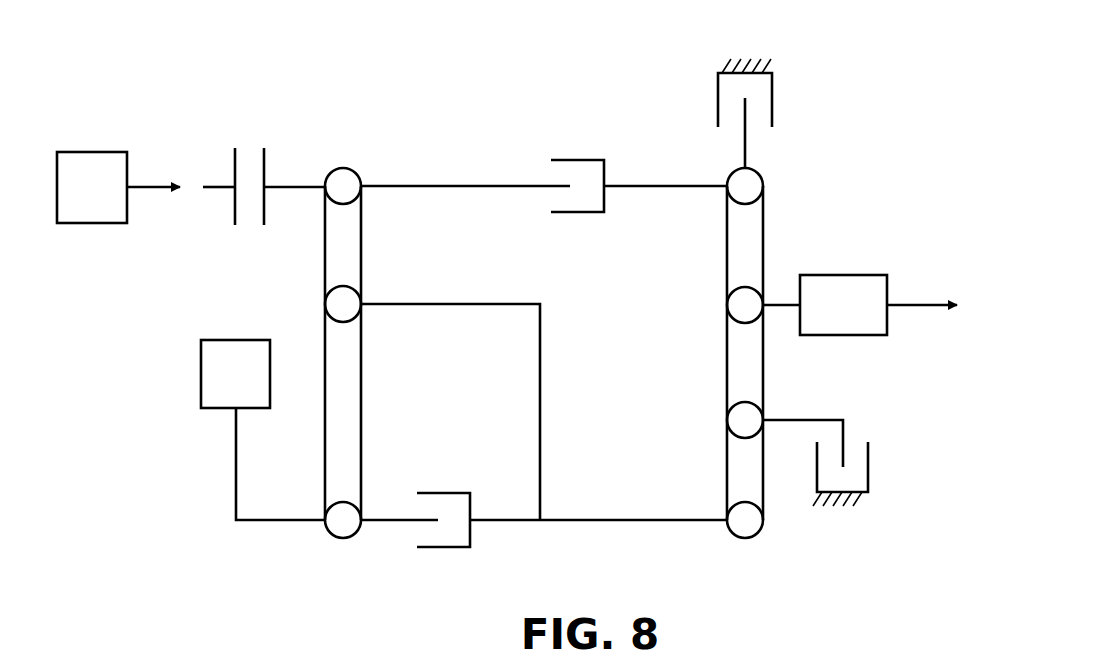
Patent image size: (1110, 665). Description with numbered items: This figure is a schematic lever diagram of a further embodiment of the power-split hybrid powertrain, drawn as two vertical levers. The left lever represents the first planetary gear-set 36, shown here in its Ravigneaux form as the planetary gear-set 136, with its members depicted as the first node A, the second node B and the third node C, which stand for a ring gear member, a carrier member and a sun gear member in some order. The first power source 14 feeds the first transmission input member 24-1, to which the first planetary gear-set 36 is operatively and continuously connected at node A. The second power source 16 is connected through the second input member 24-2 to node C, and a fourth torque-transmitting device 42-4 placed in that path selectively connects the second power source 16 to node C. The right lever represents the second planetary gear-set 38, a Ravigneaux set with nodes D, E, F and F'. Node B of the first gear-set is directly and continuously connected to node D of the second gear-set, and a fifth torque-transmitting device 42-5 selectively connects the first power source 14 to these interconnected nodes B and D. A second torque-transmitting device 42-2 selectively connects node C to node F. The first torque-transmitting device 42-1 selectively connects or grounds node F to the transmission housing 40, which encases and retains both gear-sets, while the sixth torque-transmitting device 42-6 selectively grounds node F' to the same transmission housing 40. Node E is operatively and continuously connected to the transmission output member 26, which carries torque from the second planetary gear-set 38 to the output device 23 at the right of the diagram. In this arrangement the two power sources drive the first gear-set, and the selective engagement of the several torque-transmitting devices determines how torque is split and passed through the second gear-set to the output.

The second power source 16 is at (101, 152).
The fourth torque-transmitting device 42-4 is at (266, 155).
The second input member 24-2 is at (314, 187).
The Ravigneaux first planetary gear-set 136 is at (380, 366).
The first power source 14 is at (201, 391).
The first planetary gear-set 36 is at (214, 299).
The first transmission input member 24-1 is at (283, 521).
The fifth torque-transmitting device 42-5 is at (456, 548).
The second torque-transmitting device 42-2 is at (590, 213).
The first torque-transmitting device 42-1 is at (772, 98).
The transmission housing 40 is at (768, 59).
The transmission output member 26 is at (781, 305).
The second planetary gear-set 38 is at (878, 298).
The output device 23 is at (870, 336).
The sixth torque-transmitting device 42-6 is at (868, 467).
The first node A is at (331, 507).
The second node B is at (343, 323).
The third node C is at (342, 206).
The first node D is at (765, 517).
The second node E is at (758, 319).
The third node F is at (779, 157).
The fourth node F' is at (786, 391).